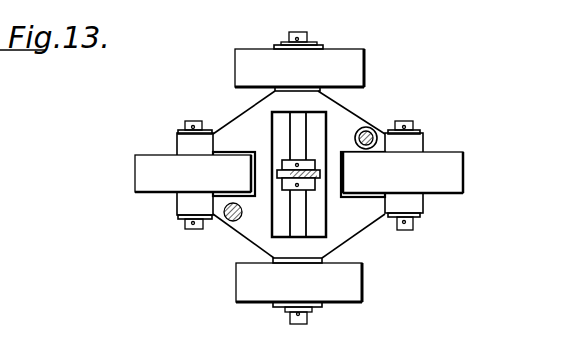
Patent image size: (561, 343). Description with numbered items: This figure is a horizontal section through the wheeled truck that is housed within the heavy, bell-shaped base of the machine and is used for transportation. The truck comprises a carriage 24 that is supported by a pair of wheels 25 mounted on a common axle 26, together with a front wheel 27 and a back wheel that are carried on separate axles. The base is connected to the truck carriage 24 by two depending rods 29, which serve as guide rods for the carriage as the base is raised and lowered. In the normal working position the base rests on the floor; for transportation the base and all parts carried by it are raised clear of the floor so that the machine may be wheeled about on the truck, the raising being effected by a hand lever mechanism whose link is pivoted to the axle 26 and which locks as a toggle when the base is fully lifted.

The carriage 24 is at (334, 100).
The wheels 25 is at (342, 60).
The common axle 26 is at (443, 165).
The front wheel 27 is at (149, 163).
The depending rods 29 is at (375, 129).